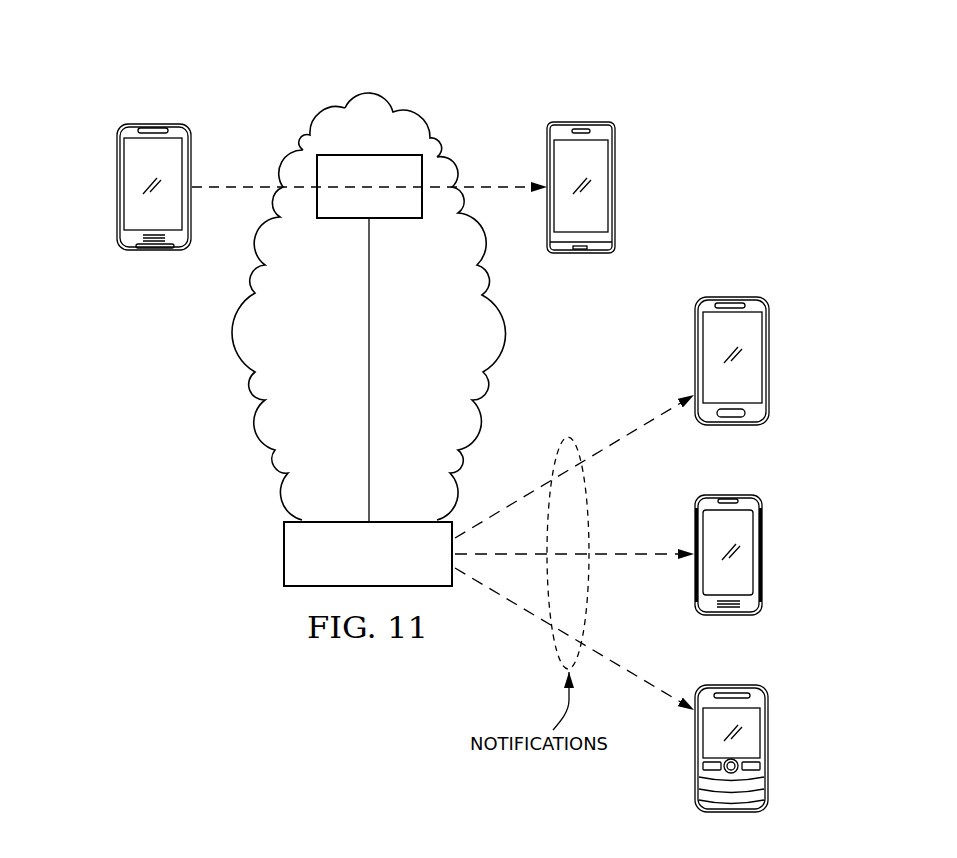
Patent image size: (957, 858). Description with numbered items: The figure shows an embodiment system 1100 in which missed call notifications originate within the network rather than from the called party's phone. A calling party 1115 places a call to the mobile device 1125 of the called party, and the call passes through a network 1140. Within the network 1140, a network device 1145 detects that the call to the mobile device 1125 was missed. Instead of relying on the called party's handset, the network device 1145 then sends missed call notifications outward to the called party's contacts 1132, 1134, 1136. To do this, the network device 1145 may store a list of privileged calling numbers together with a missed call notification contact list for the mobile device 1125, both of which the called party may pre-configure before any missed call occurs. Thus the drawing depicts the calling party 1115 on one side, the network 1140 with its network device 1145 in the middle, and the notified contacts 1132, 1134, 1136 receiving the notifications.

The system 1100 is at (211, 92).
The calling party 1115 is at (117, 168).
The mobile device 1125 is at (615, 166).
The contact 1132 is at (769, 372).
The contact 1134 is at (762, 577).
The contact 1136 is at (768, 775).
The network 1140 is at (235, 320).
The network device 1145 is at (284, 578).